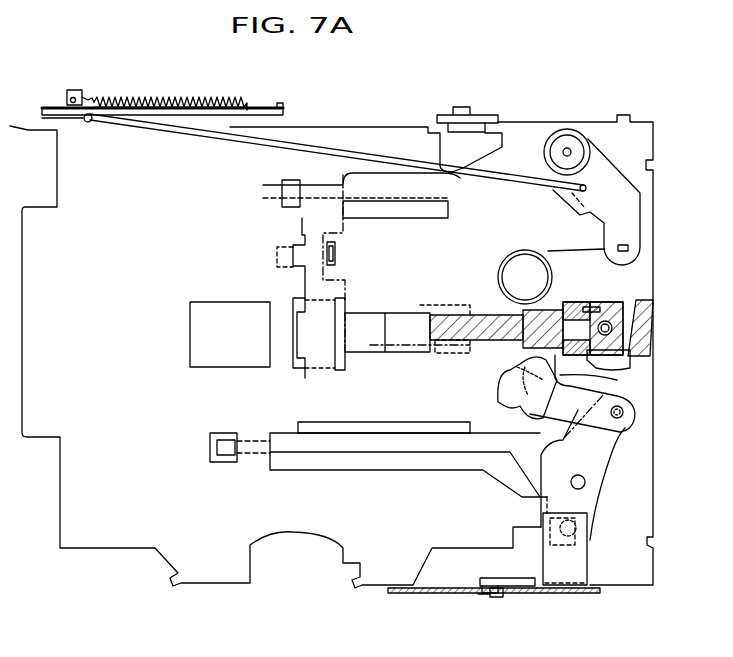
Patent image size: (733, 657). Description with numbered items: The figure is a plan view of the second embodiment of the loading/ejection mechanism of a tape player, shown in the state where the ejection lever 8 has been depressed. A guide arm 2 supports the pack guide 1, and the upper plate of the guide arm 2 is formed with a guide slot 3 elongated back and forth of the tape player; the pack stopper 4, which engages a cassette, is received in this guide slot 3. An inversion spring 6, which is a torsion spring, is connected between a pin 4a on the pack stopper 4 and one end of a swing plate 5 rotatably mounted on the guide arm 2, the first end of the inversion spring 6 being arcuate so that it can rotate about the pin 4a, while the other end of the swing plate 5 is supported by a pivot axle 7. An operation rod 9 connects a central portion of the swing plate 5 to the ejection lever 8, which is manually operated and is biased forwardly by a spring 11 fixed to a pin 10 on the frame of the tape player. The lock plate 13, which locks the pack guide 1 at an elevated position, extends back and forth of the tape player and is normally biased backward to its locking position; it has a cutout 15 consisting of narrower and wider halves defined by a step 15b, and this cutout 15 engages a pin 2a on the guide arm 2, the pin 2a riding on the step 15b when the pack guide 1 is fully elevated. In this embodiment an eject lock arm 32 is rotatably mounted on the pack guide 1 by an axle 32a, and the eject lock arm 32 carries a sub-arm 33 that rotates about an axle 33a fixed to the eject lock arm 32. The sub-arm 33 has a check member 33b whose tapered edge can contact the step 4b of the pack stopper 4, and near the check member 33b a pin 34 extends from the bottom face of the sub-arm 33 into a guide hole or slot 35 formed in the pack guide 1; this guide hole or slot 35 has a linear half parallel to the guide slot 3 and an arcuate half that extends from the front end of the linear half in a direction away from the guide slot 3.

The pack guide 1 is at (211, 557).
The guide arm 2 is at (497, 582).
The pin 2a is at (496, 597).
The guide slot 3 is at (388, 353).
The pack stopper 4 is at (620, 333).
The pin 4a is at (600, 306).
The step 4b is at (612, 365).
The swing plate 5 is at (632, 227).
The inversion spring 6 is at (553, 280).
The pivot axle 7 is at (567, 148).
The ejection lever 8 is at (280, 107).
The operation rod 9 is at (347, 157).
The pin 10 is at (65, 95).
The spring 11 is at (143, 100).
The lock plate 13 is at (412, 594).
The cutout 15 is at (508, 594).
The step 15b is at (482, 594).
The eject lock arm 32 is at (610, 453).
The axle 32a is at (587, 481).
The sub-arm 33 is at (625, 426).
The axle 33a is at (624, 410).
The check member 33b is at (618, 374).
The pin 34 is at (527, 403).
The guide hole or slot 35 is at (502, 387).